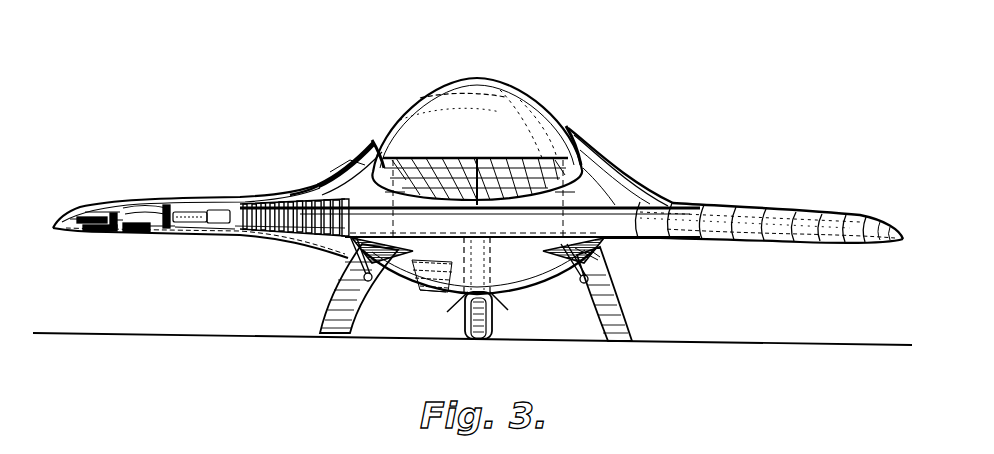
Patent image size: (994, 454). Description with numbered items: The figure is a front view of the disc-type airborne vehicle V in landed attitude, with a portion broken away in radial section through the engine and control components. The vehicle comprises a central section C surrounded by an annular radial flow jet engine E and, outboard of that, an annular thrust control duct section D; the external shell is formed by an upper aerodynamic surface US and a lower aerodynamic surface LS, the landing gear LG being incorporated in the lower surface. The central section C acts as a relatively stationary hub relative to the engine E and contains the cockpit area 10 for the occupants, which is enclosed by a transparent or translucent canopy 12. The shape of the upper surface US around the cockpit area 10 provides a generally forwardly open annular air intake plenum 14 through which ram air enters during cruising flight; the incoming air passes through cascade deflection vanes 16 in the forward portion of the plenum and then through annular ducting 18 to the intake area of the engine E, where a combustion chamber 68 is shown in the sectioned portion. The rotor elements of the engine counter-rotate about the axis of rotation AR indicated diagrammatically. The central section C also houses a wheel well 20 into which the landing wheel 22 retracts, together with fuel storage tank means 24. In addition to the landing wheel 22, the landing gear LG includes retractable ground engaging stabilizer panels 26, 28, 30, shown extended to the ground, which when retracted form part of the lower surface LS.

The cockpit area 10 is at (607, 158).
The canopy 12 is at (458, 102).
The annular air intake plenum 14 is at (378, 141).
The cascade deflection vanes 16 is at (466, 172).
The annular ducting 18 is at (348, 156).
The wheel well 20 is at (430, 302).
The landing wheel 22 is at (460, 334).
The fuel storage tank means 24 is at (550, 282).
The retractable ground engaging stabilizer panel 26 is at (328, 322).
The retractable ground engaging stabilizer panel 28 is at (633, 318).
The retractable ground engaging stabilizer panel 30 is at (494, 334).
The combustion chamber 68 is at (212, 232).
The disc-type airborne vehicle V is at (388, 57).
The central section C is at (573, 102).
The annular thrust control duct section D is at (177, 160).
The annular radial flow jet engine E is at (343, 148).
The upper aerodynamic surface US is at (218, 196).
The lower aerodynamic surface LS is at (249, 244).
The axis of rotation AR is at (486, 226).
The landing gear LG is at (537, 316).